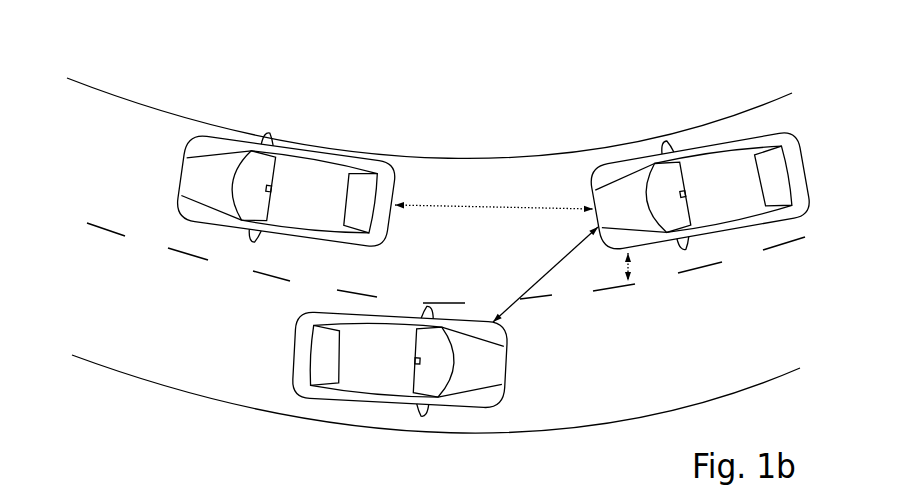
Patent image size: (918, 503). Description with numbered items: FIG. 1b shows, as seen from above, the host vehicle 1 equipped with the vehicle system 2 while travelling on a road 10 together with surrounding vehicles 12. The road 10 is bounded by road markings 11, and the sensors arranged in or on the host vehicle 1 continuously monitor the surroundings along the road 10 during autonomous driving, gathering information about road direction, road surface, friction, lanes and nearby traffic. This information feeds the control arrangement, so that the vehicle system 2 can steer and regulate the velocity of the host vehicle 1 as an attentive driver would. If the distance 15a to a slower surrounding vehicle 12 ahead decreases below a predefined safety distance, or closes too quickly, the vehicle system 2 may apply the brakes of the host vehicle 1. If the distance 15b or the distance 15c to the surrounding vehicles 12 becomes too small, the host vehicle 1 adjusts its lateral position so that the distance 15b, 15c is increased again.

The host vehicle 1 is at (728, 193).
The vehicle system 2 is at (633, 115).
The road 10 is at (436, 280).
The road markings 11 is at (105, 232).
The surrounding vehicle 12 is at (319, 206).
The distance 15a is at (494, 199).
The distance 15b is at (545, 274).
The distance 15c is at (635, 281).